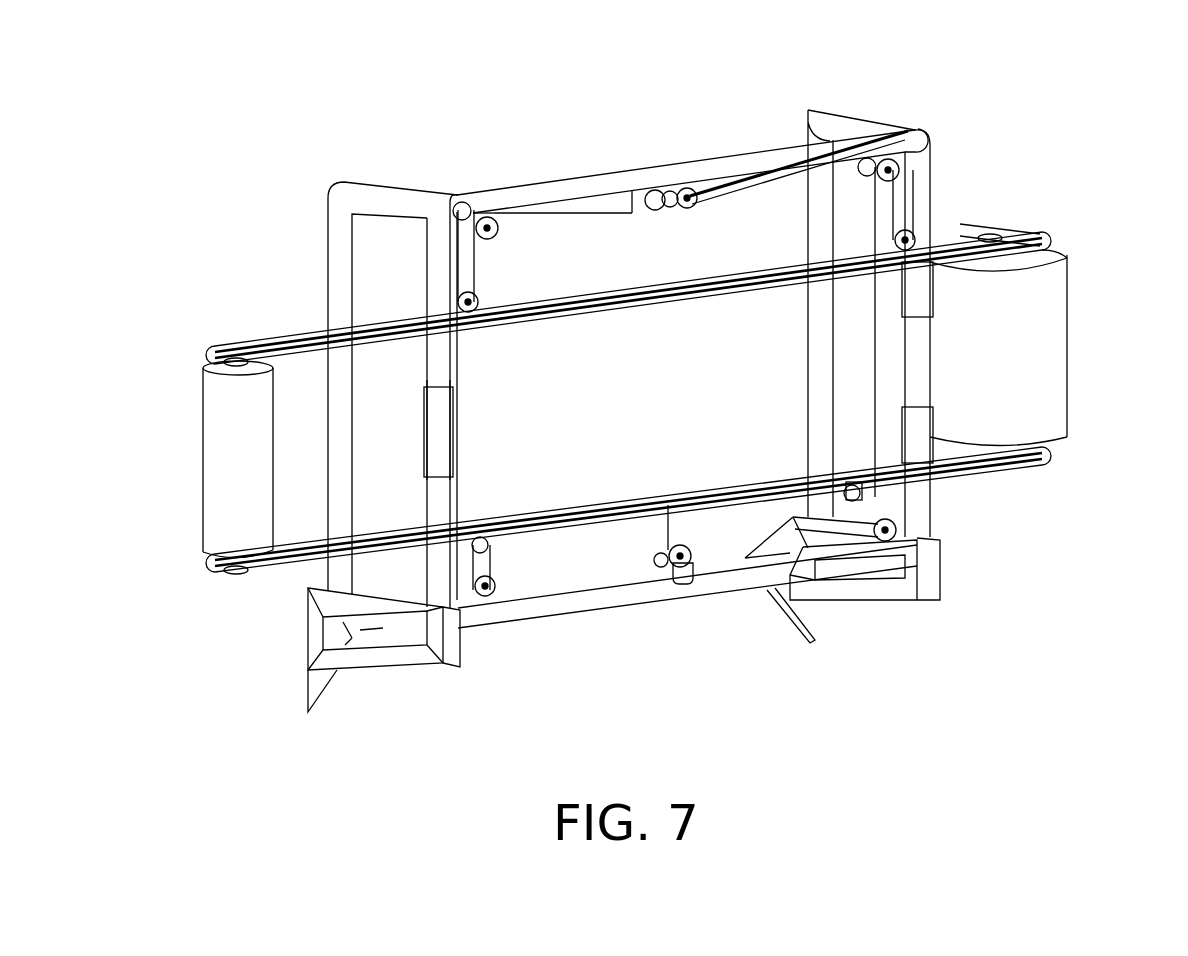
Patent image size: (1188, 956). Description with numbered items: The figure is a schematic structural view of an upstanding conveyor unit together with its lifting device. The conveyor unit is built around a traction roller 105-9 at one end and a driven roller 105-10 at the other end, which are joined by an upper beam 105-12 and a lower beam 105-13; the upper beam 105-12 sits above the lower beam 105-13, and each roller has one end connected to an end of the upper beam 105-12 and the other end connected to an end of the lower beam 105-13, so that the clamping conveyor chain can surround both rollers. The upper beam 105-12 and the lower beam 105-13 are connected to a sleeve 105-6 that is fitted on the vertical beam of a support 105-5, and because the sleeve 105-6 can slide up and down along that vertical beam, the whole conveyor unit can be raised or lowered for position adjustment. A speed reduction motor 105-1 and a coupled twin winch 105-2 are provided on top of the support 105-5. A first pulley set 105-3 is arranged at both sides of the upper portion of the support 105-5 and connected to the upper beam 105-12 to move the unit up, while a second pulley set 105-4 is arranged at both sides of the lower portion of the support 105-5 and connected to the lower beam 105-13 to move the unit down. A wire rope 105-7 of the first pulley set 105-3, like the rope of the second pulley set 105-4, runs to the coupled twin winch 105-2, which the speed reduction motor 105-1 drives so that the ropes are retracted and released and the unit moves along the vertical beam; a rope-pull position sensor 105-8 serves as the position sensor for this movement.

The speed reduction motor 105-1 is at (632, 193).
The coupled twin winch 105-2 is at (693, 190).
The first pulley set 105-3 is at (443, 197).
The second pulley set 105-4 is at (497, 597).
The support 105-5 is at (433, 467).
The sleeve 105-6 is at (425, 370).
The wire rope 105-7 is at (737, 176).
The rope-pull position sensor 105-8 is at (698, 558).
The traction roller 105-9 is at (233, 410).
The driven roller 105-10 is at (1025, 378).
The upper beam 105-12 is at (967, 233).
The lower beam 105-13 is at (943, 473).